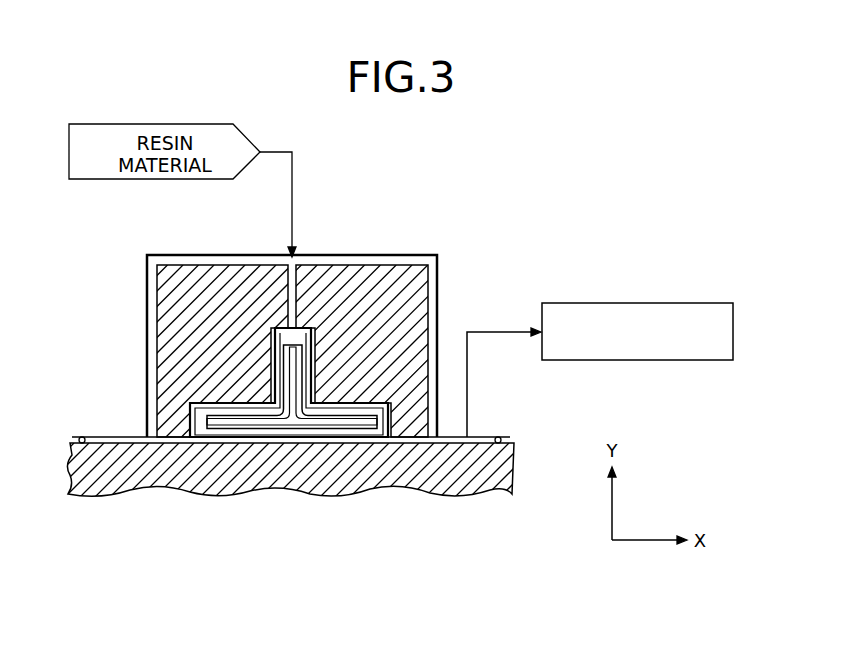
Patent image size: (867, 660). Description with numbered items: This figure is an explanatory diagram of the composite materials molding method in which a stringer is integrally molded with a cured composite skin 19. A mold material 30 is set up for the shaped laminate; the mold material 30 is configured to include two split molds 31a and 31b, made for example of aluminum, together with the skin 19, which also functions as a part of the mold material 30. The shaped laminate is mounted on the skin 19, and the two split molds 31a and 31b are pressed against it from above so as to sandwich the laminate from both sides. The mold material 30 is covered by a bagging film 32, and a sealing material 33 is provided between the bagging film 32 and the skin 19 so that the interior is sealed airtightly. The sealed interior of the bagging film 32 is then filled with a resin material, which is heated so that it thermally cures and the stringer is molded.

The mold material 30 is at (141, 302).
The split mold 31a is at (222, 256).
The split mold 31b is at (363, 256).
The bagging film 32 is at (437, 317).
The sealing material 33 is at (82, 436).
The skin 19 is at (373, 440).